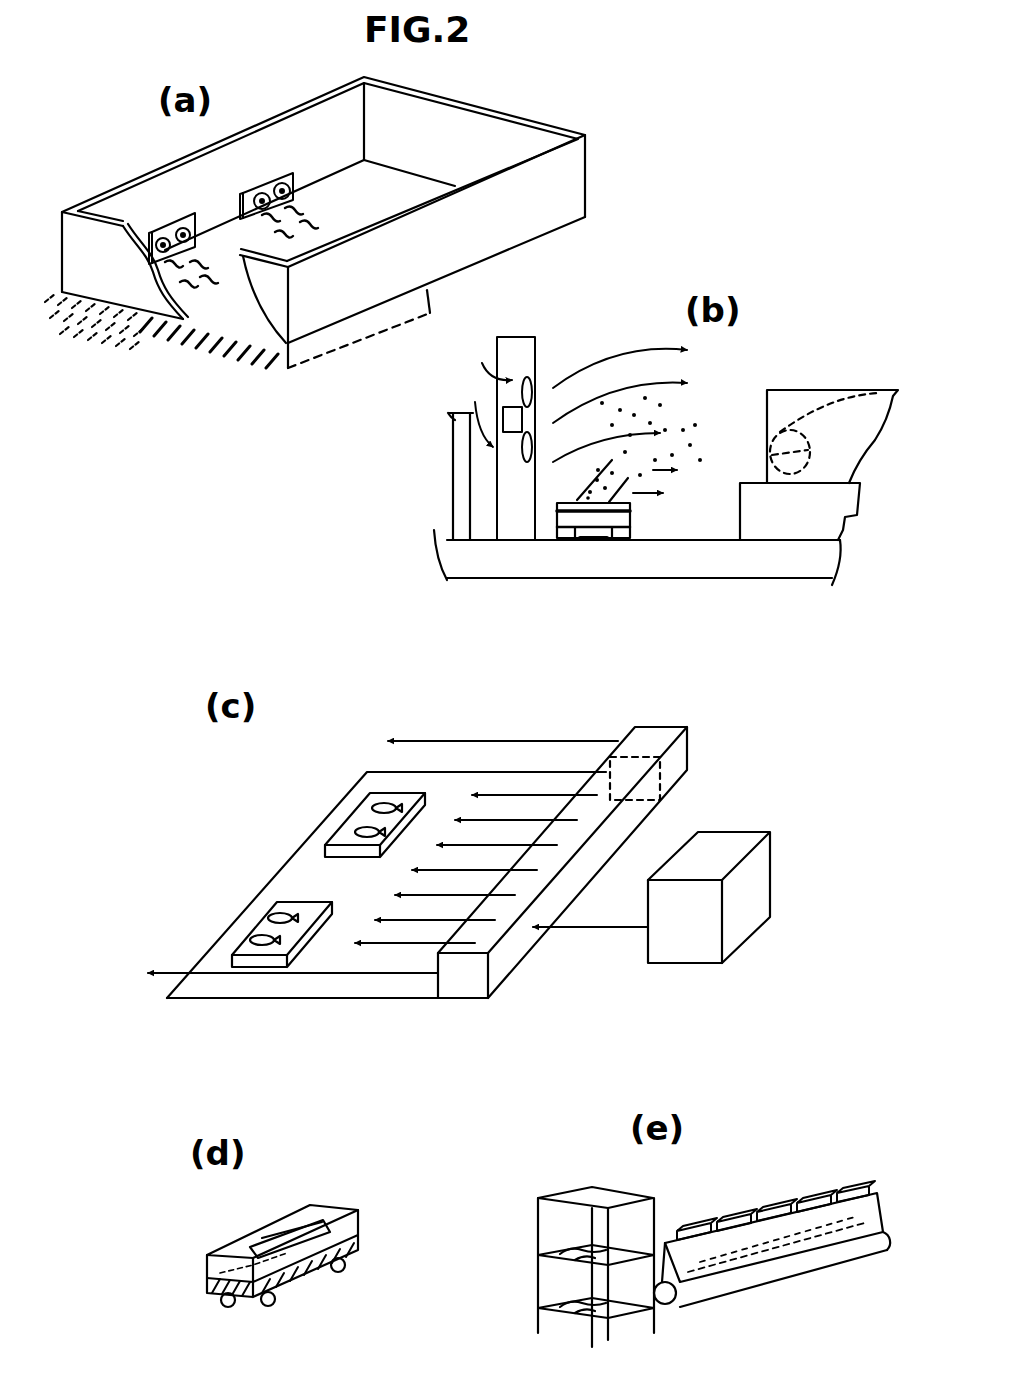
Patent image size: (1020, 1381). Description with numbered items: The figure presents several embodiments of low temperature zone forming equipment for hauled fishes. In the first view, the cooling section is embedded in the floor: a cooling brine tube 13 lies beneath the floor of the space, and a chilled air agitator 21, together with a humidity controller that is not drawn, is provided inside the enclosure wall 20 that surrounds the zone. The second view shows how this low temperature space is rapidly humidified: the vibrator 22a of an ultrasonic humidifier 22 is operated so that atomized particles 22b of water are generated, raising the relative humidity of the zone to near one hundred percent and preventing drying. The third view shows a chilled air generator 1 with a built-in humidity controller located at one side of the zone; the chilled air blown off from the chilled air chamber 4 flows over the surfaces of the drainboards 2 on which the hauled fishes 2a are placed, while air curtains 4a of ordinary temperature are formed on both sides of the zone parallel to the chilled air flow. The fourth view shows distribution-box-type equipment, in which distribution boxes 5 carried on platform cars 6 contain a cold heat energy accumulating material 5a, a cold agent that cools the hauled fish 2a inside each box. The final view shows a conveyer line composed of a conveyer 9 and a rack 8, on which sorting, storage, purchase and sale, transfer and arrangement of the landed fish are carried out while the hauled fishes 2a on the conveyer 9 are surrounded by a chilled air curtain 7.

The enclosure wall 20 is at (476, 104).
The chilled air agitator 21 is at (292, 176).
The cooling brine tube 13 is at (251, 364).
The ultrasonic humidifier 22 is at (632, 519).
The vibrator 22a is at (594, 543).
The atomized particles 22b is at (668, 402).
The drainboards 2 is at (740, 518).
The hauled fishes 2a is at (800, 400).
The chilled air chamber 4 is at (664, 734).
The air curtains 4a is at (453, 739).
The chilled air generator 1 is at (726, 838).
The distribution boxes 5 is at (216, 1250).
The cold heat energy accumulating material 5a is at (283, 1280).
The platform cars 6 is at (220, 1307).
The chilled air curtain 7 is at (800, 1200).
The rack 8 is at (539, 1322).
The conveyer 9 is at (843, 1263).